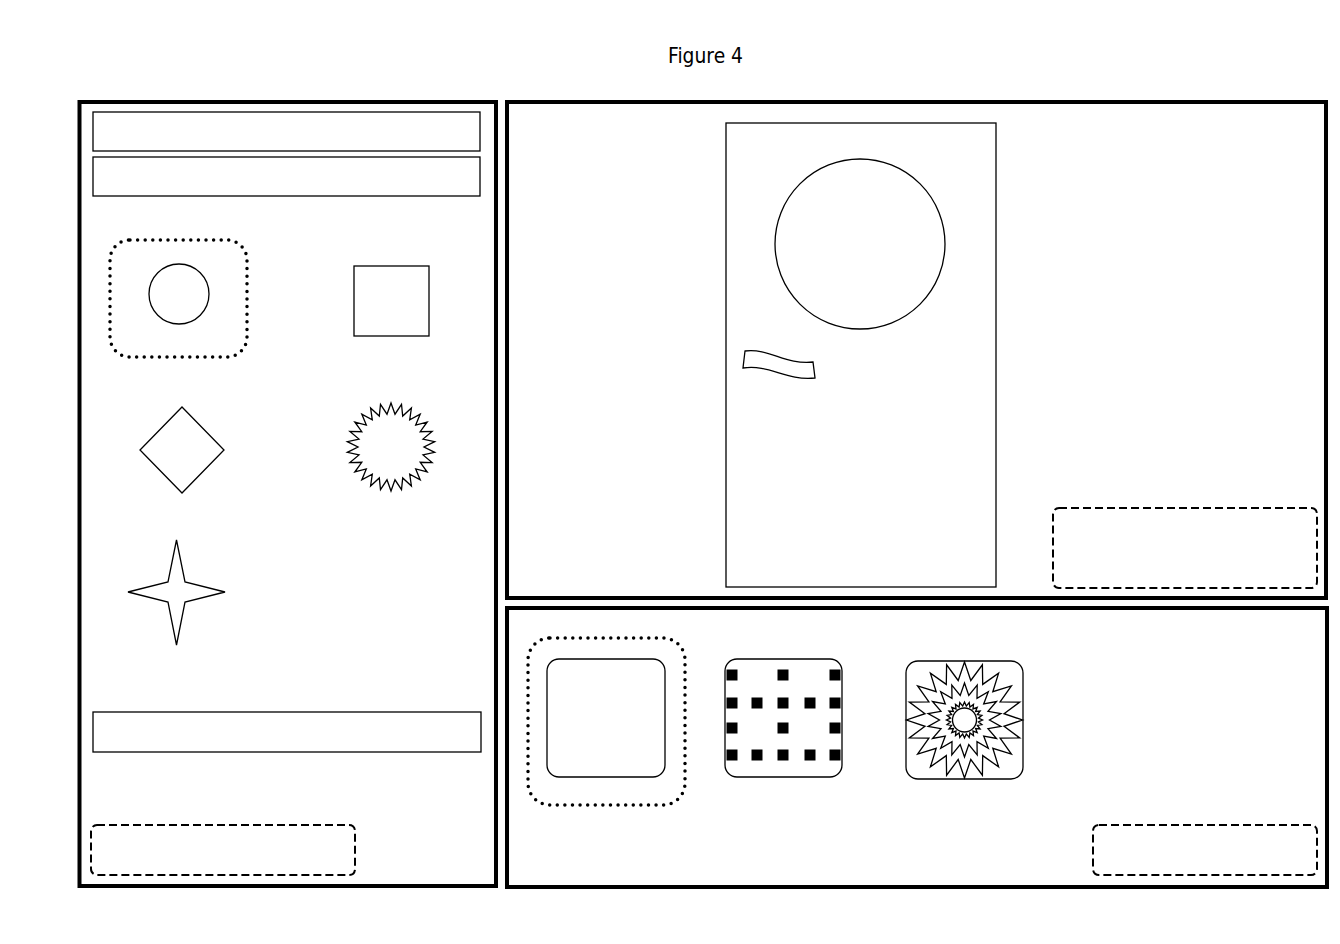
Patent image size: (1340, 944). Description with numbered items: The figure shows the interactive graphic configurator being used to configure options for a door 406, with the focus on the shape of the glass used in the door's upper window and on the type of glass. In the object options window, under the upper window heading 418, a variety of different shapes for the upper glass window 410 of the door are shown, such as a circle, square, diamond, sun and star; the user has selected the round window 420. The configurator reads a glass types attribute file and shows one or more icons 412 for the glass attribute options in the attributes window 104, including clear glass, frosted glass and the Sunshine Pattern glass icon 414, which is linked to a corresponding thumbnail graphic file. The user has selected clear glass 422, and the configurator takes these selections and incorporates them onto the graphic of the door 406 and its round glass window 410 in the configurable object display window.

The attributes window 104 is at (704, 494).
The door 406 is at (1013, 270).
The glass window 410 is at (233, 580).
The upper window heading 418 is at (343, 205).
The object options window selection 420 is at (233, 372).
The glass attributes icons 412 is at (688, 642).
The attributes window selection 422 is at (693, 787).
The Sunshine Pattern glass icon 414 is at (982, 788).